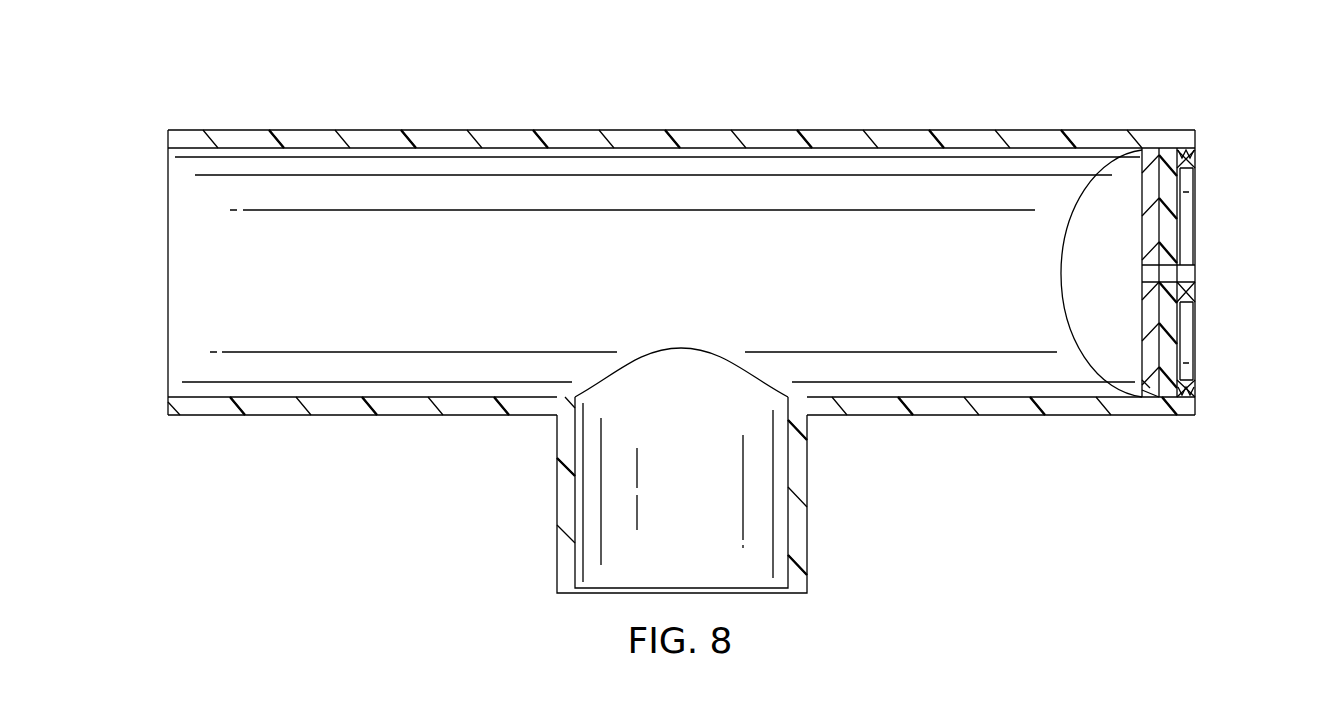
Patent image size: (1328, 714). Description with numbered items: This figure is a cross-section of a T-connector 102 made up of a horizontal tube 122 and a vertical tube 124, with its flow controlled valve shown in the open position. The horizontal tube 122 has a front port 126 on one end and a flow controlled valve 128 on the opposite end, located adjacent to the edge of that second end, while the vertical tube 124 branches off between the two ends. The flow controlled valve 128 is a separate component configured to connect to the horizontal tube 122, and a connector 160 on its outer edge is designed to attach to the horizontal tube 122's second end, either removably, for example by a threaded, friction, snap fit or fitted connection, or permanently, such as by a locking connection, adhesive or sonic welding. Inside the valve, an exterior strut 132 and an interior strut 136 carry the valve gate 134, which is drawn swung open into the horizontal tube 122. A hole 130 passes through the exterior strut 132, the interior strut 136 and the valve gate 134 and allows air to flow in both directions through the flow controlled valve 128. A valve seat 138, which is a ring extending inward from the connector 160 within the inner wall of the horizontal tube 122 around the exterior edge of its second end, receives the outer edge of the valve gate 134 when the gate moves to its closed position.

The T-connector 102 is at (398, 94).
The horizontal tube 122 is at (707, 137).
The vertical tube 124 is at (557, 503).
The front port 126 is at (177, 272).
The flow controlled valve 128 is at (1224, 310).
The hole 130 is at (1190, 272).
The exterior strut 132 is at (1190, 240).
The valve gate 134 is at (1168, 157).
The interior strut 136 is at (1150, 395).
The valve seat 138 is at (1192, 370).
The connector 160 is at (1198, 152).